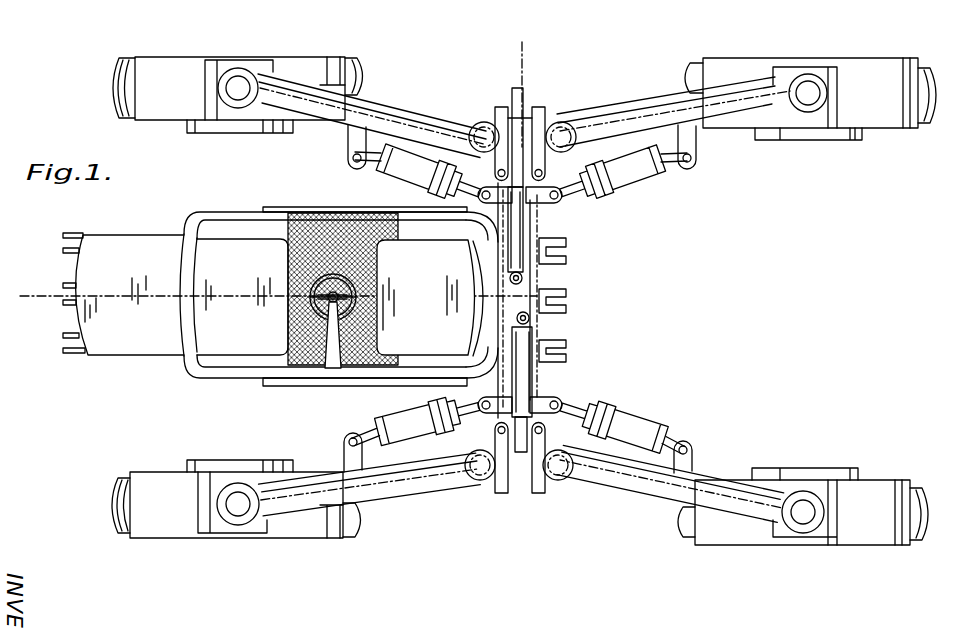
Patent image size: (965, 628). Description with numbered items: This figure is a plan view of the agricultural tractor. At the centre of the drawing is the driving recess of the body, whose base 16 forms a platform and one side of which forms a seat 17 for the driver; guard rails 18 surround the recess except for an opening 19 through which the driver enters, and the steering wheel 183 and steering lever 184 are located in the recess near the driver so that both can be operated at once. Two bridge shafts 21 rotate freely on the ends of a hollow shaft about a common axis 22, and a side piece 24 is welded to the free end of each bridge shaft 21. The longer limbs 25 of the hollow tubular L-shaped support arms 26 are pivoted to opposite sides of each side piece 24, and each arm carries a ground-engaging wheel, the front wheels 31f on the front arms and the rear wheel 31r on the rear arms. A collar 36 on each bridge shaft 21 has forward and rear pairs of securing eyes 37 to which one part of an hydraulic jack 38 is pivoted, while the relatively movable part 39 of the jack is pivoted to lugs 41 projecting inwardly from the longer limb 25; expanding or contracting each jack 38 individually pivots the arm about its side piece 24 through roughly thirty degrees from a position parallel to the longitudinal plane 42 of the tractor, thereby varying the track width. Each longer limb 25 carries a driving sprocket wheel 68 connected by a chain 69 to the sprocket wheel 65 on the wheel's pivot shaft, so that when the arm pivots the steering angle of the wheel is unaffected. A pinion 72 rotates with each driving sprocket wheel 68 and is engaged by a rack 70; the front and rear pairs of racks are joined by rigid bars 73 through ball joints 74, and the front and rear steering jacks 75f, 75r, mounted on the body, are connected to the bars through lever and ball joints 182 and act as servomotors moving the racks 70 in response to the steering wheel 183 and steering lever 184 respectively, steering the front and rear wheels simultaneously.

The front wheels 31f is at (114, 83).
The rear wheel 31r is at (929, 123).
The sprocket wheel 65 is at (809, 96).
The longer limb 25 is at (372, 103).
The support arm 26 is at (744, 138).
The chain 69 is at (758, 106).
The lugs 41 is at (348, 140).
The relatively movable part 39 is at (350, 160).
The hydraulic jack 38 is at (380, 160).
The ball joints 74 is at (480, 196).
The pinion 72 is at (482, 119).
The rack 70 is at (503, 107).
The lever and ball joints 182 is at (509, 140).
The sprocket wheel 68 is at (494, 130).
The side piece 24 is at (535, 122).
The common axis 22 is at (525, 97).
The rigid bar 73 is at (528, 327).
The collar 36 is at (545, 256).
The front steering jack 75f is at (536, 295).
The rear steering jack 75r is at (531, 380).
The bridge shaft 21 is at (532, 200).
The securing eyes 37 is at (553, 197).
The guard rails 18 is at (220, 212).
The opening 19 is at (277, 207).
The base 16 is at (322, 220).
The seat 17 is at (428, 292).
The steering lever 184 is at (304, 294).
The steering wheel 183 is at (315, 308).
The longitudinal plane 42 is at (117, 290).